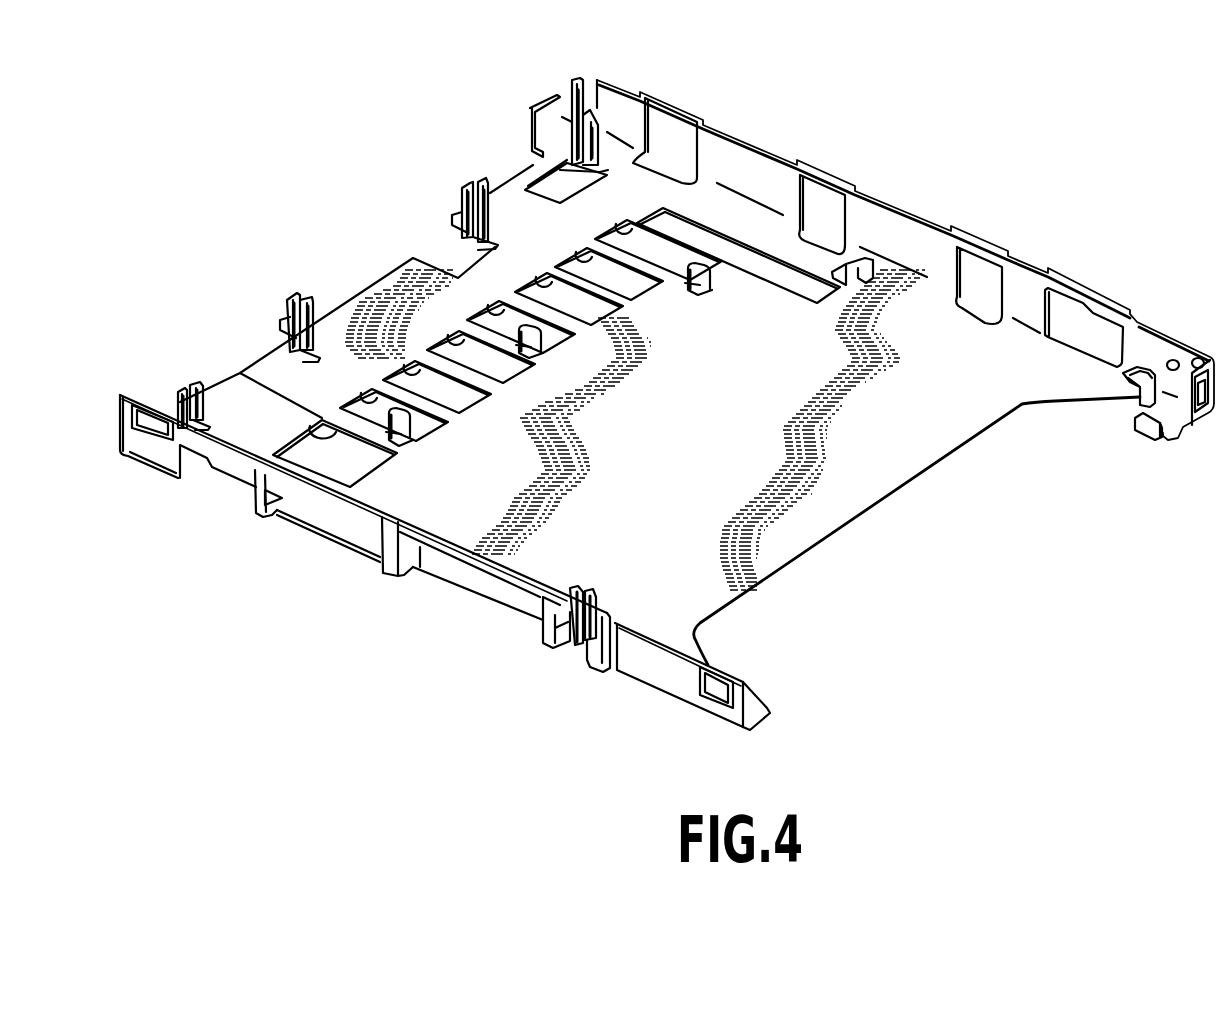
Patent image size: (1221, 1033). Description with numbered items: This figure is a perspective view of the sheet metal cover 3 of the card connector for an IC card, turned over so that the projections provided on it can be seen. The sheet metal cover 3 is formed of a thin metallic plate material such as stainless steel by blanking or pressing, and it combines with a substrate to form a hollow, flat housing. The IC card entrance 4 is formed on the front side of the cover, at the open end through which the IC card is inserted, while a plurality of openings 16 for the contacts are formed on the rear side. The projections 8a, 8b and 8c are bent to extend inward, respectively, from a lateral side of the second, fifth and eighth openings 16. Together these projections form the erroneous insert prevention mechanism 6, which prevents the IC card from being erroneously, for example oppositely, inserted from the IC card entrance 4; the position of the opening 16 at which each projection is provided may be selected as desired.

The sheet metal cover 3 is at (904, 215).
The IC card entrance 4 is at (860, 515).
The erroneous insert prevention mechanism 6 is at (424, 451).
The projection 8a is at (415, 437).
The projection 8b is at (547, 345).
The projection 8c is at (708, 278).
The openings 16 is at (580, 248).